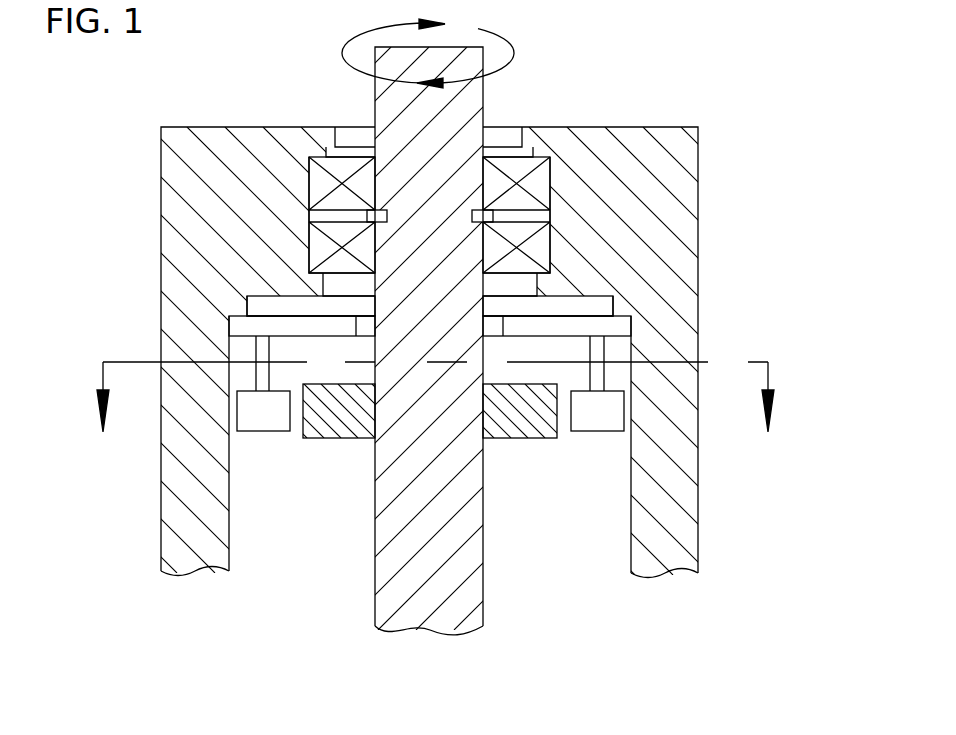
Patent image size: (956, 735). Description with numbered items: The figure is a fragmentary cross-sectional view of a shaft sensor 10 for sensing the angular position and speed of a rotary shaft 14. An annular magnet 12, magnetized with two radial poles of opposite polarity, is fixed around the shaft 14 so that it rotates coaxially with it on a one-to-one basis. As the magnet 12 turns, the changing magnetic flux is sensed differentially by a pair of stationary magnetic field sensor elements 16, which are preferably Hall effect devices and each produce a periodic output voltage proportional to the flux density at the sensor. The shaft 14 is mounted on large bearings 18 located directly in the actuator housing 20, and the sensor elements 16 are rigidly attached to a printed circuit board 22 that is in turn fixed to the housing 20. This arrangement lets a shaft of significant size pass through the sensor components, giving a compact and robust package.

The shaft sensor 10 is at (478, 323).
The magnet 12 is at (537, 438).
The shaft 14 is at (484, 590).
The magnetic field sensor elements 16 is at (262, 432).
The bearings 18 is at (553, 233).
The actuator housing 20 is at (675, 188).
The printed circuit board 22 is at (631, 316).